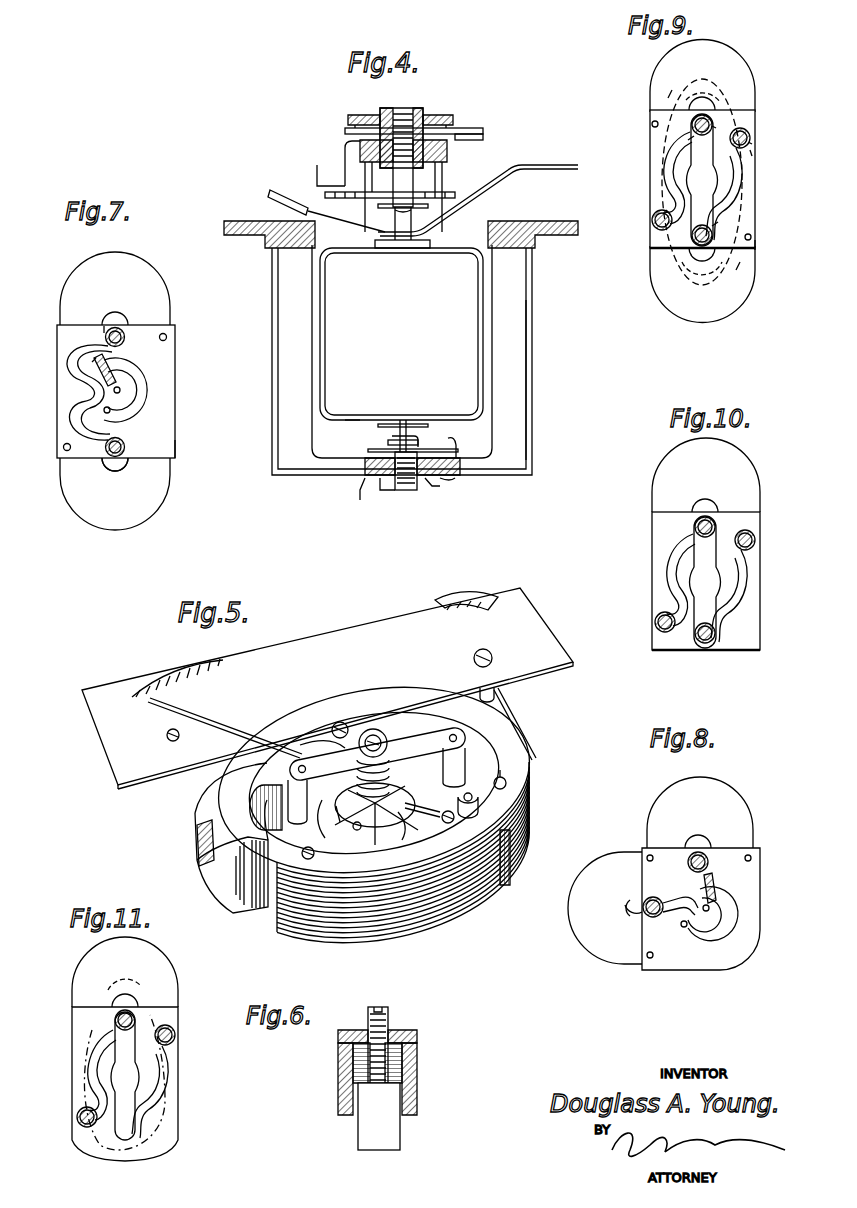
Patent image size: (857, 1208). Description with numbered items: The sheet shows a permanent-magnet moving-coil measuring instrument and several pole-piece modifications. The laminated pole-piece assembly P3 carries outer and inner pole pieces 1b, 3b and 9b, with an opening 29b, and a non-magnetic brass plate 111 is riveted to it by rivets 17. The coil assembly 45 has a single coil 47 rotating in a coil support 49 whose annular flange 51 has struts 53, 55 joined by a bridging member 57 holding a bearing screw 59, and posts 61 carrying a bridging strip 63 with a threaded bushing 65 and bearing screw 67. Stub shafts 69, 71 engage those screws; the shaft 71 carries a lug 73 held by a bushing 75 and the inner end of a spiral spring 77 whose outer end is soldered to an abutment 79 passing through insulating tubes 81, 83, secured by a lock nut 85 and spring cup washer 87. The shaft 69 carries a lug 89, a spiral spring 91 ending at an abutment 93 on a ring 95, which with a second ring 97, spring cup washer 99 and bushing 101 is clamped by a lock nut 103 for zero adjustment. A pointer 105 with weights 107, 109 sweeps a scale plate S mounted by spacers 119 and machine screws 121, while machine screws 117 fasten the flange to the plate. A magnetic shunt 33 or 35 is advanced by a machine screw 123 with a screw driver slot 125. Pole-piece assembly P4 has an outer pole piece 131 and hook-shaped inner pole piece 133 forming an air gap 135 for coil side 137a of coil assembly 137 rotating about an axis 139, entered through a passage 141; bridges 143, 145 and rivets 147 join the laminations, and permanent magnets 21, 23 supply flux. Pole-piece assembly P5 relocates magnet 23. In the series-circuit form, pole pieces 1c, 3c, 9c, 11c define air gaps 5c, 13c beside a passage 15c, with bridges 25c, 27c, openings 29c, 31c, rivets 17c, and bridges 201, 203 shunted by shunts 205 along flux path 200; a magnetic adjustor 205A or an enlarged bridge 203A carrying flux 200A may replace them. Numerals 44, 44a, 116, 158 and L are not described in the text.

In FIG. 5, the outer magnetic pole piece 1b is at (310, 822).
In FIG. 9, the outer magnetic pole piece 1c is at (652, 147).
In FIG. 5, the inner magnetic pole piece 3b is at (334, 825).
In FIG. 9, the inner magnetic pole piece 3c is at (684, 178).
In FIG. 9, the arcuate air gap 5c is at (683, 138).
In FIG. 5, the inner magnetic pole piece 9b is at (400, 842).
In FIG. 9, the inner magnetic pole piece 9c is at (722, 206).
In FIG. 9, the outer magnetic pole piece 11c is at (714, 222).
In FIG. 9, the arcuate air gap 13c is at (702, 180).
In FIG. 9, the passage 15c is at (715, 129).
In FIG. 5, the rivets 17 is at (502, 771).
In FIG. 9, the rivets 17c is at (652, 124).
In FIG. 7, the permanent magnet 21 is at (60, 290).
In FIG. 9, the permanent magnet 21 is at (660, 67).
In FIG. 10, the permanent magnet 21 is at (740, 460).
In FIG. 8, the permanent magnet 21 is at (726, 792).
In FIG. 11, the permanent magnet 21 is at (76, 971).
In FIG. 7, the permanent magnet 23 is at (70, 497).
In FIG. 9, the permanent magnet 23 is at (668, 310).
In FIG. 8, the permanent magnet 23 is at (596, 956).
In FIG. 9, the magnetic bridge 25c is at (651, 222).
In FIG. 10, the magnetic bridge 25c is at (653, 633).
In FIG. 9, the magnetic bridge 27c is at (750, 150).
In FIG. 10, the magnetic bridge 27c is at (758, 530).
In FIG. 6, the opening 29b is at (412, 1068).
In FIG. 9, the opening 29c is at (666, 212).
In FIG. 9, the opening 31c is at (751, 143).
In FIG. 7, the magnetic shunt 33 is at (125, 339).
In FIG. 9, the magnetic shunt 33 is at (664, 230).
In FIG. 8, the magnetic shunt 33 is at (708, 864).
In FIG. 11, the magnetic shunt 33 is at (77, 1118).
In FIG. 6, the magnetic shunt 33 is at (400, 1132).
In FIG. 7, the magnetic shunt 35 is at (125, 447).
In FIG. 9, the magnetic shunt 35 is at (752, 138).
In FIG. 8, the magnetic shunt 35 is at (659, 918).
In FIG. 11, the magnetic shunt 35 is at (176, 1037).
In FIG. 5, the housing segment 44 is at (206, 872).
In FIG. 5, the housing segment face 44a is at (196, 858).
In FIG. 4, the coil assembly 45 is at (408, 332).
In FIG. 5, the coil assembly 45 is at (400, 784).
In FIG. 4, the coil 47 is at (350, 423).
In FIG. 4, the coil support 49 is at (527, 325).
In FIG. 4, the annular flange 51 is at (563, 235).
In FIG. 5, the annular flange 51 is at (478, 766).
In FIG. 4, the strut 53 is at (272, 388).
In FIG. 4, the strut 55 is at (527, 390).
In FIG. 4, the bridging member 57 is at (340, 477).
In FIG. 4, the bearing screw 59 is at (410, 492).
In FIG. 4, the posts 61 is at (443, 178).
In FIG. 5, the posts 61 is at (290, 796).
In FIG. 4, the bridging strip 63 is at (454, 120).
In FIG. 5, the bridging strip 63 is at (428, 737).
In FIG. 4, the threaded bushing 65 is at (420, 114).
In FIG. 5, the threaded bushing 65 is at (380, 738).
In FIG. 4, the bearing screw 67 is at (400, 112).
In FIG. 5, the bearing screw 67 is at (371, 738).
In FIG. 4, the stub shaft 69 is at (394, 210).
In FIG. 4, the stub shaft 71 is at (388, 442).
In FIG. 4, the lug 73 is at (424, 436).
In FIG. 4, the bushing 75 is at (392, 432).
In FIG. 4, the spiral electro-conductive spring 77 is at (368, 452).
In FIG. 4, the electro-conductive abutment 79 is at (457, 448).
In FIG. 4, the insulating tube 81 is at (446, 480).
In FIG. 4, the insulating tube 83 is at (432, 487).
In FIG. 4, the lock nut 85 is at (392, 492).
In FIG. 4, the spring cup washer 87 is at (368, 495).
In FIG. 4, the lug 89 is at (430, 208).
In FIG. 4, the electro-conductive spiral spring 91 is at (450, 195).
In FIG. 4, the electro-conductive abutment 93 is at (318, 183).
In FIG. 4, the ring 95 is at (448, 145).
In FIG. 4, the second ring 97 is at (345, 131).
In FIG. 4, the spring cup washer 99 is at (348, 119).
In FIG. 4, the bushing 101 is at (448, 156).
In FIG. 4, the lock nut 103 is at (345, 158).
In FIG. 4, the pointer 105 is at (553, 172).
In FIG. 5, the pointer 105 is at (234, 738).
In FIG. 5, the adjustable weight 107 is at (358, 832).
In FIG. 4, the adjustable weight 109 is at (268, 195).
In FIG. 5, the adjustable weight 109 is at (446, 826).
In FIG. 6, the brass plate 111 is at (418, 1036).
In FIG. 5, the brass plate 111 is at (508, 720).
In FIG. 5, the stop post 116 is at (430, 801).
In FIG. 5, the machine screws 117 is at (314, 856).
In FIG. 5, the spacers 119 is at (498, 694).
In FIG. 5, the machine screws 121 is at (492, 660).
In FIG. 6, the machine screw 123 is at (390, 1030).
In FIG. 6, the screw driver slot 125 is at (378, 1010).
In FIG. 7, the outer pole piece 131 is at (168, 387).
In FIG. 7, the inner pole piece 133 is at (136, 380).
In FIG. 7, the arcuate air gap 135 is at (140, 402).
In FIG. 7, the moving-coil assembly 137 is at (110, 364).
In FIG. 7, the coil side 137a is at (93, 364).
In FIG. 7, the axis 139 is at (113, 390).
In FIG. 7, the passage 141 is at (92, 406).
In FIG. 8, the passage 141 is at (676, 900).
In FIG. 7, the bridge 143 is at (117, 332).
In FIG. 7, the bridge 145 is at (108, 463).
In FIG. 8, the bridge 145 is at (648, 910).
In FIG. 7, the rivets 147 is at (166, 334).
In FIG. 5, the rotor 158 is at (386, 814).
In FIG. 9, the dotted line 200 is at (708, 96).
In FIG. 11, the dotted line 200A is at (124, 1050).
In FIG. 9, the magnetic bridge 201 is at (712, 92).
In FIG. 10, the magnetic bridge 201 is at (716, 492).
In FIG. 11, the magnetic bridge 201 is at (120, 1010).
In FIG. 9, the magnetic bridge 203 is at (702, 270).
In FIG. 10, the magnetic bridge 203 is at (700, 651).
In FIG. 11, the bridge 203A is at (130, 1158).
In FIG. 9, the magnetic shunt 205 is at (761, 239).
In FIG. 11, the magnetic shunt 205 is at (114, 1022).
In FIG. 10, the magnetic adjustor 205A is at (712, 641).
In FIG. 5, the lamination L is at (308, 937).
In FIG. 6, the pole-piece assembly P3 is at (418, 1096).
In FIG. 5, the pole-piece assembly P3 is at (425, 916).
In FIG. 7, the pole-piece assembly P4 is at (174, 450).
In FIG. 9, the pole-piece assembly P4 is at (753, 250).
In FIG. 10, the pole-piece assembly P4 is at (752, 612).
In FIG. 8, the pole-piece assembly P5 is at (760, 906).
In FIG. 11, the pole-piece assembly P5 is at (178, 1138).
In FIG. 5, the scale plate S is at (542, 622).